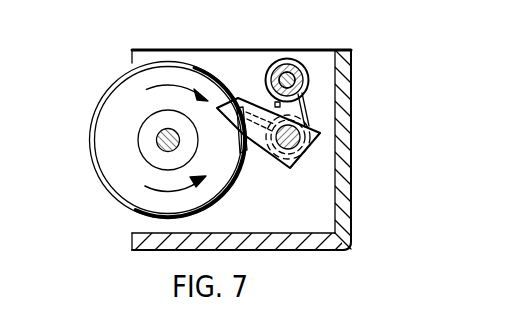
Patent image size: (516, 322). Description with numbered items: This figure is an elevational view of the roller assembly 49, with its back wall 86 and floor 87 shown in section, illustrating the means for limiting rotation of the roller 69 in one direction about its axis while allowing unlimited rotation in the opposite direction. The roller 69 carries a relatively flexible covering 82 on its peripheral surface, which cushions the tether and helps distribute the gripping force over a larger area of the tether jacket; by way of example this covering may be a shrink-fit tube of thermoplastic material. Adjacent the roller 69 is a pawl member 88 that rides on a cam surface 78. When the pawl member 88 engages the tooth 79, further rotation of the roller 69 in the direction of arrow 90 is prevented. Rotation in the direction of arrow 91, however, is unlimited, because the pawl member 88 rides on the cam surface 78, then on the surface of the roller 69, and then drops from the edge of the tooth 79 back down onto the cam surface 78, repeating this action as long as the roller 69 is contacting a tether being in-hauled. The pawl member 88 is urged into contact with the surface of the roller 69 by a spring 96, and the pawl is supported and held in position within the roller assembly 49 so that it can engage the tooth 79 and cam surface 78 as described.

The roller assembly 49 is at (350, 243).
The roller 69 is at (113, 103).
The cam surface 78 is at (252, 171).
The tooth 79 is at (234, 98).
The flexible covering 82 is at (92, 152).
The back wall 86 is at (352, 65).
The floor 87 is at (226, 233).
The pawl member 88 is at (252, 98).
The arrow 90 is at (157, 84).
The arrow 91 is at (145, 193).
The spring 96 is at (307, 107).